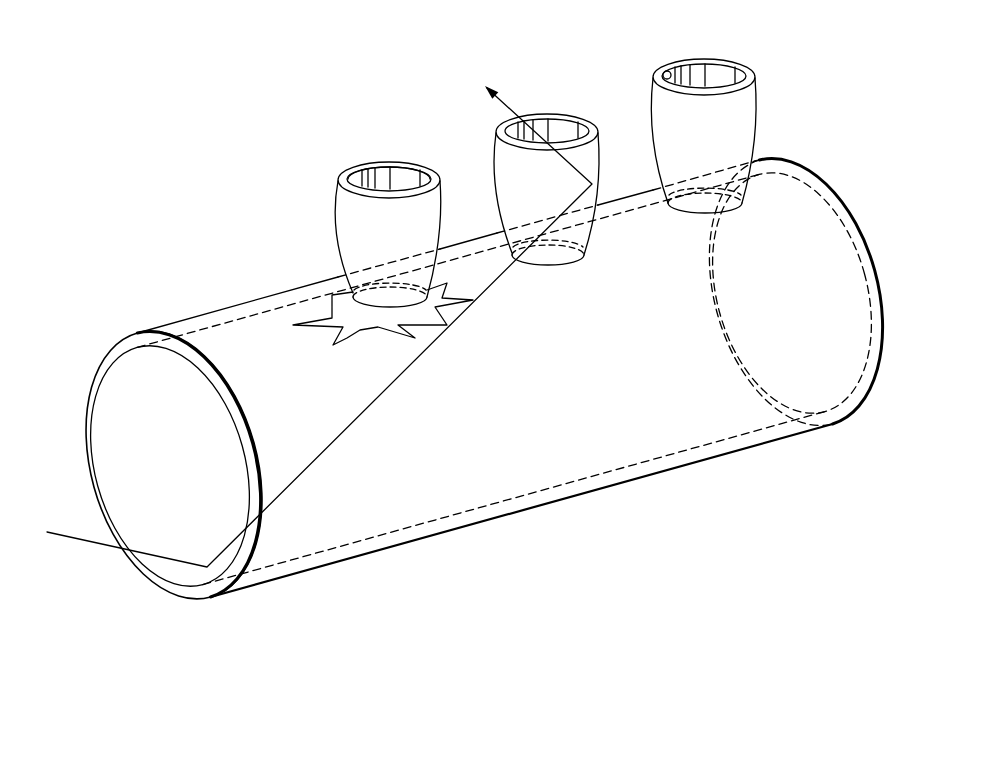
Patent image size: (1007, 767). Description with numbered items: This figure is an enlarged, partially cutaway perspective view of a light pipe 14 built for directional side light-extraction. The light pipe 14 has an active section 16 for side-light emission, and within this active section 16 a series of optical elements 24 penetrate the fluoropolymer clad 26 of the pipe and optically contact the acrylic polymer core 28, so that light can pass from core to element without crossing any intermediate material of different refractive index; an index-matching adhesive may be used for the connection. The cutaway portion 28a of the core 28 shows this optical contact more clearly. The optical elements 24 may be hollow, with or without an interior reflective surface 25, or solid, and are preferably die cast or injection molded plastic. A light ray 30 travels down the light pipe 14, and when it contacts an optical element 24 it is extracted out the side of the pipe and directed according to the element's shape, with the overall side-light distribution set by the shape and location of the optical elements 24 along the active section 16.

The light pipe 14 is at (245, 182).
The active section 16 is at (707, 27).
The optical element 24 is at (405, 226).
The interior reflective surface 25 is at (657, 72).
The fluoropolymer clad 26 is at (137, 336).
The core 28 is at (142, 458).
The cutaway portion 28a is at (360, 327).
The light ray 30 is at (338, 433).